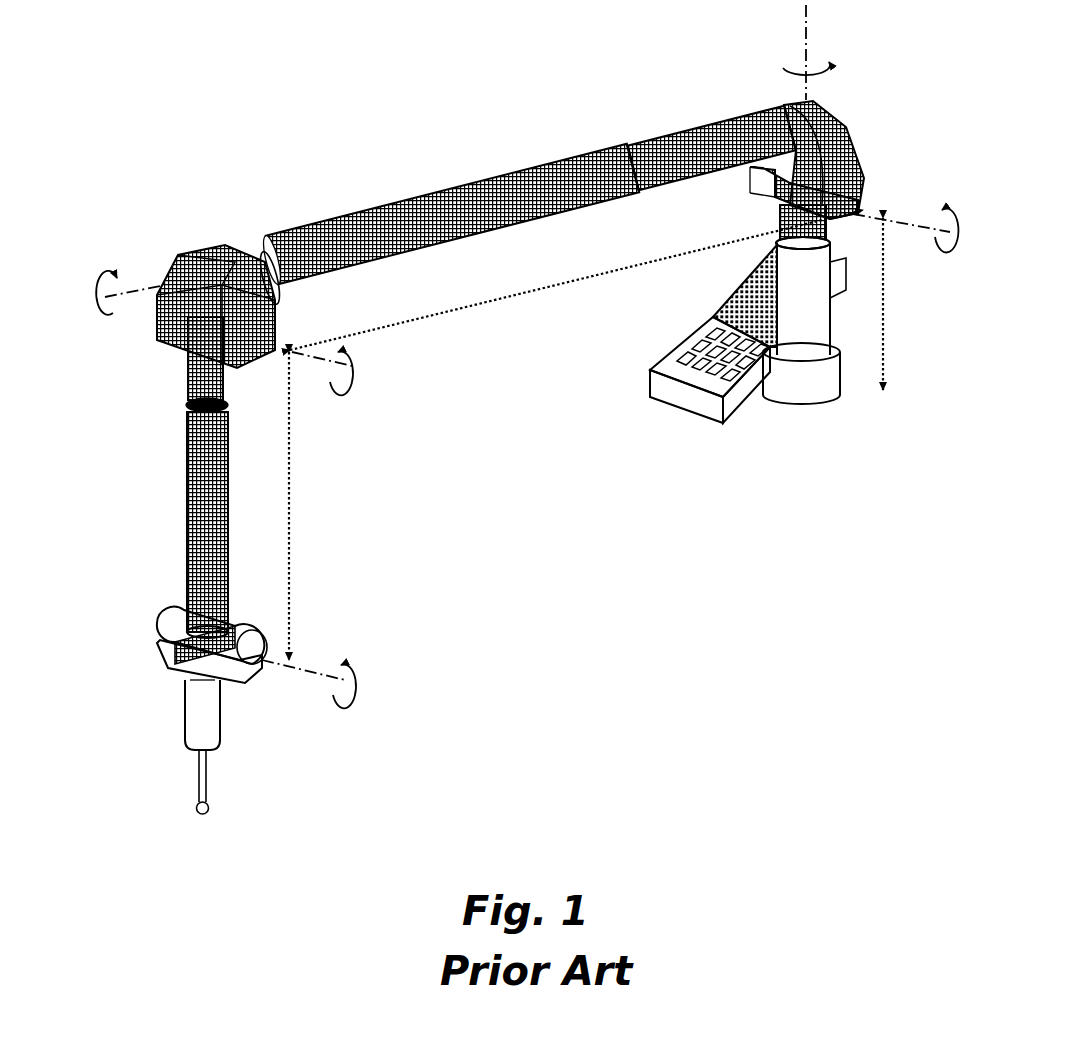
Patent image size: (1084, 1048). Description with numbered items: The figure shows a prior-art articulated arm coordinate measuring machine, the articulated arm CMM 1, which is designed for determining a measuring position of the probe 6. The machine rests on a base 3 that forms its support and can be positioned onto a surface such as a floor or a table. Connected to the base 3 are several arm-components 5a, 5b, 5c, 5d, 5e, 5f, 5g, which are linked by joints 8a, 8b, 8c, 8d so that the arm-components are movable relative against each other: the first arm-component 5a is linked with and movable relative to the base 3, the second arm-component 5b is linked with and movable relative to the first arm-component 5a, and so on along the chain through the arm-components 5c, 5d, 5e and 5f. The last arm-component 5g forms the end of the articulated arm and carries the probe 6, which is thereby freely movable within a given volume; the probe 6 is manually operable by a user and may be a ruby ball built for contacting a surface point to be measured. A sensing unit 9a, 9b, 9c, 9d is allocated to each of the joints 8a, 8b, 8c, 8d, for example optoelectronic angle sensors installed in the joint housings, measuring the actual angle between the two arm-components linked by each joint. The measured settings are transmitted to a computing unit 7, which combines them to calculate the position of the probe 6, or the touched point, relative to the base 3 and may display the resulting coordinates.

The articulated arm CMM 1 is at (227, 40).
The base 3 is at (807, 336).
The first arm-component 5a is at (756, 227).
The second arm-component 5b is at (732, 151).
The third arm-component 5c is at (449, 206).
The fourth arm-component 5d is at (180, 288).
The fifth arm-component 5e is at (141, 361).
The sixth arm-component 5f is at (147, 525).
The last arm-component 5g is at (167, 695).
The probe 6 is at (203, 806).
The computing unit 7 is at (658, 349).
The joint 8a is at (649, 190).
The sensing unit 9a is at (649, 190).
The joint 8b is at (278, 242).
The sensing unit 9b is at (278, 242).
The joint 8c is at (268, 394).
The sensing unit 9c is at (268, 394).
The joint 8d is at (262, 635).
The sensing unit 9d is at (262, 635).